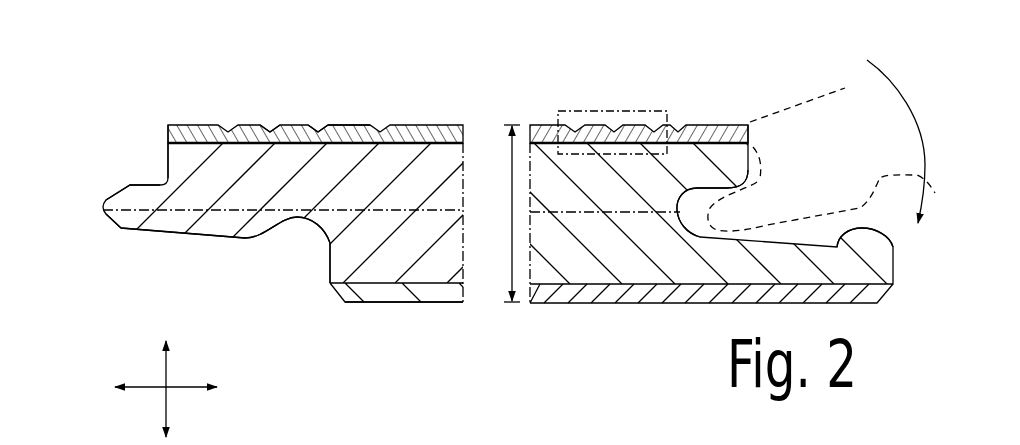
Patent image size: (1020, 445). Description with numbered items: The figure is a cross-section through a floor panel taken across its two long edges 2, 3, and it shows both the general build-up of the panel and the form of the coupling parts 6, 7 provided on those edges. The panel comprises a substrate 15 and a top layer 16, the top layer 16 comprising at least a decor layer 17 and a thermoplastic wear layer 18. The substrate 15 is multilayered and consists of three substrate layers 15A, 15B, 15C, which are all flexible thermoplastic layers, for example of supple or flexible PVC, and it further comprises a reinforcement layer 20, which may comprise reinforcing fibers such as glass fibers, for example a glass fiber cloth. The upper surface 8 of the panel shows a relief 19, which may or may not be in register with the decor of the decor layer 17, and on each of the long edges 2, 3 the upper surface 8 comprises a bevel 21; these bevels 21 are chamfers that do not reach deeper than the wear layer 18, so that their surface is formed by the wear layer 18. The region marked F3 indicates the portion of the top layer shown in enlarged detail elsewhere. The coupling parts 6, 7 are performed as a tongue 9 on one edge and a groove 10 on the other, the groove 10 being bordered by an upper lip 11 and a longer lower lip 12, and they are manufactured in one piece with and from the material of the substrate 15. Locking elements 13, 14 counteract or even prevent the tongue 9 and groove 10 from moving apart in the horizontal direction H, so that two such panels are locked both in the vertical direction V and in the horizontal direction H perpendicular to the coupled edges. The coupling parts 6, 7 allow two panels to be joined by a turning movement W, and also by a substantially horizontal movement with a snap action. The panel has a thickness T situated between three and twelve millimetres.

The long edge 2 is at (152, 105).
The bevel 21 is at (168, 125).
The relief 19 is at (263, 113).
The upper surface 8 is at (293, 125).
The decor layer 17 is at (320, 137).
The thermoplastic wear layer 18 is at (345, 130).
The substrate layer 15A is at (388, 170).
The substrate 15 is at (473, 192).
The top layer 16 is at (157, 132).
The tongue 9 is at (142, 195).
The coupling part 6 is at (148, 245).
The locking element 13 is at (248, 240).
The reinforcement layer 20 is at (293, 218).
The substrate layer 15C is at (360, 293).
The substrate layer 15B is at (385, 253).
The detail region of FIG. 3 F3 is at (582, 110).
The upper lip 11 is at (727, 157).
The long edge 3 is at (773, 143).
The coupling part 7 is at (792, 188).
The locking element 14 is at (863, 240).
The lower lip 12 is at (842, 267).
The groove 10 is at (695, 223).
The thickness T is at (511, 216).
The turning movement W is at (898, 88).
The vertical direction V is at (168, 375).
The horizontal direction H is at (152, 392).